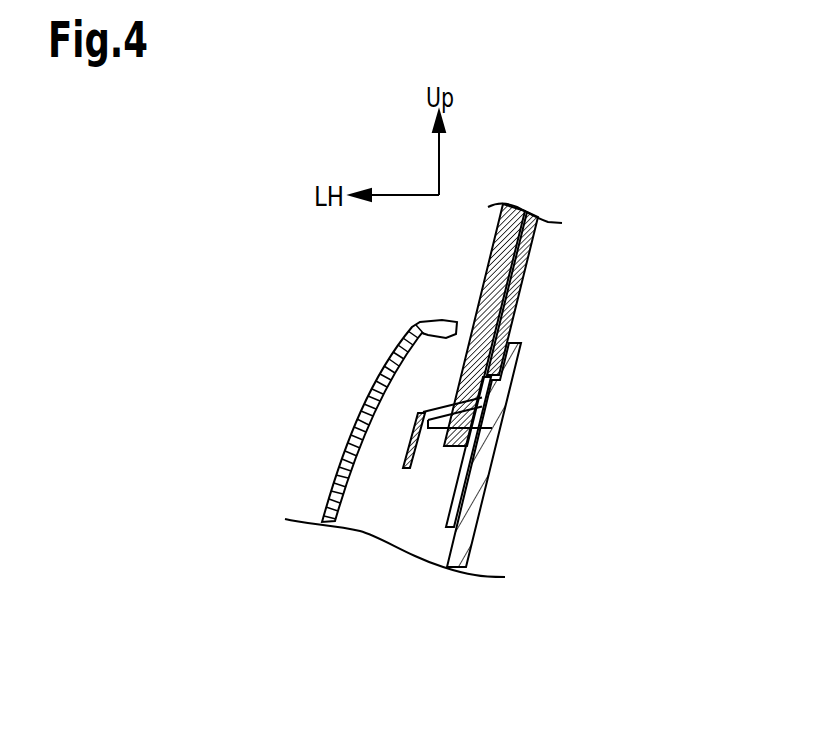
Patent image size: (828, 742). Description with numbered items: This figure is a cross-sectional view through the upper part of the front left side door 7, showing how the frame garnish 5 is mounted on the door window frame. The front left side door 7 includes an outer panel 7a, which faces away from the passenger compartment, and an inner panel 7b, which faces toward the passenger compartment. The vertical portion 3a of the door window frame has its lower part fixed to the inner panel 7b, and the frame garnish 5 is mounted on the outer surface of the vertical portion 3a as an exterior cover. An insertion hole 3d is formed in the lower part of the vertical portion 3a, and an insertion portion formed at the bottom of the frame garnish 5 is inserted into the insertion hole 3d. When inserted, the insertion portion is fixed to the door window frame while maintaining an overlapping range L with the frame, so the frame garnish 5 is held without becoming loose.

The frame garnish 5 is at (489, 262).
The vertical portion 3a is at (526, 268).
The insertion hole 3d is at (447, 401).
The front left side door 7 is at (315, 427).
The outer panel 7a is at (340, 474).
The inner panel 7b is at (489, 470).
The overlapping range L is at (428, 446).